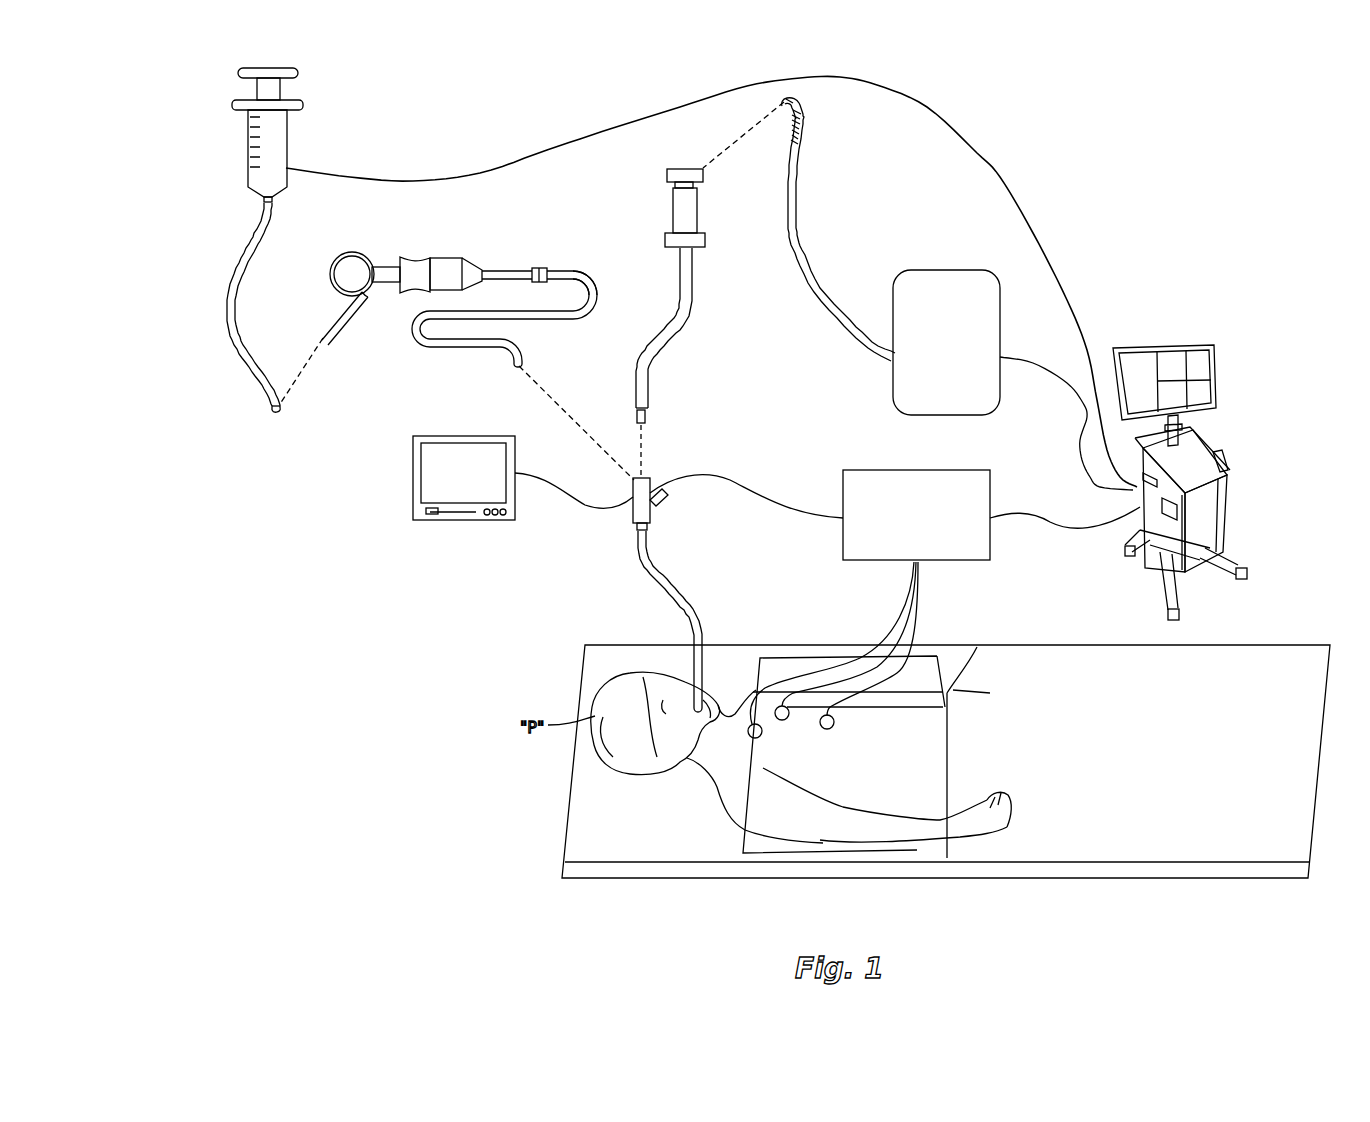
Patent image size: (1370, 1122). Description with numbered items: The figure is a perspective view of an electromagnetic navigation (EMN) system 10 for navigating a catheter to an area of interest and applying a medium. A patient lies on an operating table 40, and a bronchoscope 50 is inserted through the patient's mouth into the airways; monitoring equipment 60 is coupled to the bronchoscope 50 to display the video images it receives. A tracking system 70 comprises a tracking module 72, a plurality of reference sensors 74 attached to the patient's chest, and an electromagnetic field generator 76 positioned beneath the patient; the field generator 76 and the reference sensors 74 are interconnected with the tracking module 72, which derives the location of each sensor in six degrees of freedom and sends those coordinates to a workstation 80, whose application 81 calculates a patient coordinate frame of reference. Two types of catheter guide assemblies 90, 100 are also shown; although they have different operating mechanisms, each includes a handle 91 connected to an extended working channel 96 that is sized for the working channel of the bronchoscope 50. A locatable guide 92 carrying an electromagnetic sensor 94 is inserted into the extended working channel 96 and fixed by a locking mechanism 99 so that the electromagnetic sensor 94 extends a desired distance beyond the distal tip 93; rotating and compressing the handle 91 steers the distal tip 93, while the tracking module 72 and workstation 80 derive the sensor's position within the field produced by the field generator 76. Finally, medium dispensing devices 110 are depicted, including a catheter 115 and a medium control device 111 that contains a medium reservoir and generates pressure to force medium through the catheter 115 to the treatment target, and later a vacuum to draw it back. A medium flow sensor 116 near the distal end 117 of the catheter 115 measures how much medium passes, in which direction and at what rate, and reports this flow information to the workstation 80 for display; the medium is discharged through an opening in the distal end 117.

The EMN system 10 is at (1114, 171).
The operating table 40 is at (580, 805).
The bronchoscope 50 is at (645, 572).
The monitoring equipment 60 is at (413, 487).
The tracking system 70 is at (944, 481).
The tracking module 72 is at (916, 515).
The reference sensors 74 is at (762, 736).
The electromagnetic field generator 76 is at (760, 846).
The workstation 80 is at (1201, 482).
The application 81 is at (1217, 378).
The catheter guide assembly 90 is at (444, 246).
The handle 91 is at (700, 172).
The locatable guide 92 is at (513, 268).
The distal tip 93 is at (517, 367).
The electromagnetic sensor 94 is at (521, 362).
The extended working channel 96 is at (590, 298).
The locking mechanism 99 is at (541, 266).
The catheter guide assembly 100 is at (734, 221).
The medium dispensing devices 110 is at (946, 305).
The medium control device 111 is at (946, 342).
The catheter 115 is at (262, 214).
The medium flow sensor 116 is at (801, 117).
The distal end 117 is at (270, 410).